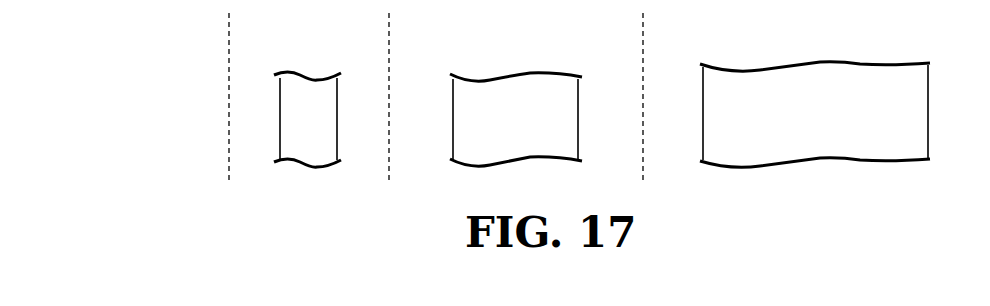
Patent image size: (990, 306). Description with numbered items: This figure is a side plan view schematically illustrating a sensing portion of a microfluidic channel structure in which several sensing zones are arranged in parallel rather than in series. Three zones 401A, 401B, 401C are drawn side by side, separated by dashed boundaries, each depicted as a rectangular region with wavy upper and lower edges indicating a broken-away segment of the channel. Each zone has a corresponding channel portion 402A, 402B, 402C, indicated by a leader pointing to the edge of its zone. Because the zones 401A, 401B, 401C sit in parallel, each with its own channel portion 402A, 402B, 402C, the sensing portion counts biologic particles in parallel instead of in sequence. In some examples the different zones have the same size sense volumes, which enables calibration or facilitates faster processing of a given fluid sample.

The zone 401C is at (329, 58).
The channel portion 402C is at (280, 118).
The zone 401B is at (537, 59).
The channel portion 402B is at (578, 113).
The zone 401A is at (827, 48).
The channel portion 402A is at (928, 97).